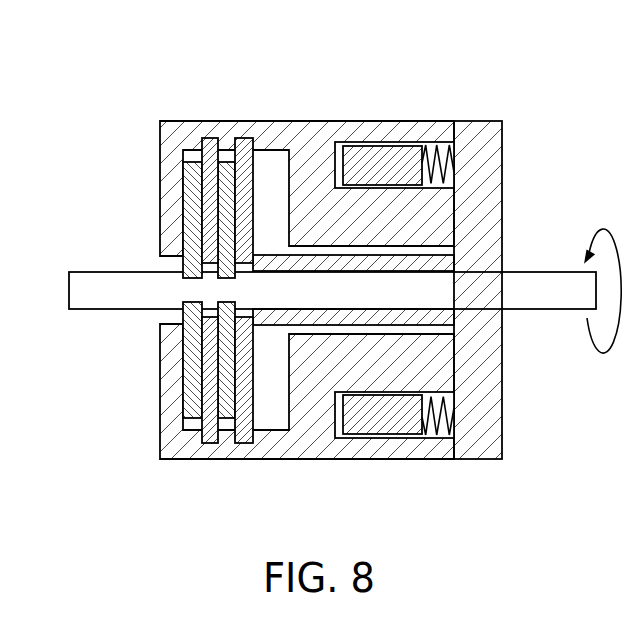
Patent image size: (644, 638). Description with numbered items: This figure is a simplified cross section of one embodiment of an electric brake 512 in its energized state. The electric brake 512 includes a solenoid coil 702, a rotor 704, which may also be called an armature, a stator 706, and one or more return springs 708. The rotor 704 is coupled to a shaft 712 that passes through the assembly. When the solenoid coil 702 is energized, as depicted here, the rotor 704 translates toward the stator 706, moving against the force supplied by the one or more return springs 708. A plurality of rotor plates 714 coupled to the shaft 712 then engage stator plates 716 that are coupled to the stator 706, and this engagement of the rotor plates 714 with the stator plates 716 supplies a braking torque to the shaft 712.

The electric brake 512 is at (80, 111).
The solenoid coil 702 is at (405, 150).
The rotor 704 is at (503, 138).
The stator 706 is at (321, 133).
The return springs 708 is at (453, 417).
The shaft 712 is at (547, 309).
The rotor plates 714 is at (200, 160).
The stator plates 716 is at (209, 443).